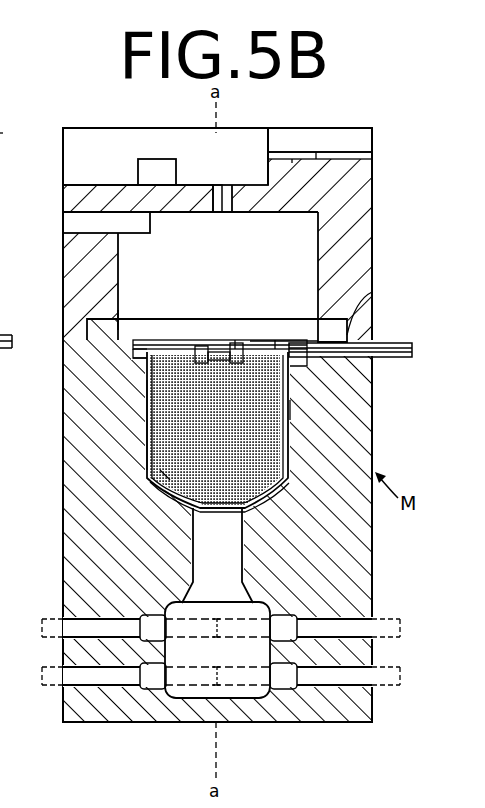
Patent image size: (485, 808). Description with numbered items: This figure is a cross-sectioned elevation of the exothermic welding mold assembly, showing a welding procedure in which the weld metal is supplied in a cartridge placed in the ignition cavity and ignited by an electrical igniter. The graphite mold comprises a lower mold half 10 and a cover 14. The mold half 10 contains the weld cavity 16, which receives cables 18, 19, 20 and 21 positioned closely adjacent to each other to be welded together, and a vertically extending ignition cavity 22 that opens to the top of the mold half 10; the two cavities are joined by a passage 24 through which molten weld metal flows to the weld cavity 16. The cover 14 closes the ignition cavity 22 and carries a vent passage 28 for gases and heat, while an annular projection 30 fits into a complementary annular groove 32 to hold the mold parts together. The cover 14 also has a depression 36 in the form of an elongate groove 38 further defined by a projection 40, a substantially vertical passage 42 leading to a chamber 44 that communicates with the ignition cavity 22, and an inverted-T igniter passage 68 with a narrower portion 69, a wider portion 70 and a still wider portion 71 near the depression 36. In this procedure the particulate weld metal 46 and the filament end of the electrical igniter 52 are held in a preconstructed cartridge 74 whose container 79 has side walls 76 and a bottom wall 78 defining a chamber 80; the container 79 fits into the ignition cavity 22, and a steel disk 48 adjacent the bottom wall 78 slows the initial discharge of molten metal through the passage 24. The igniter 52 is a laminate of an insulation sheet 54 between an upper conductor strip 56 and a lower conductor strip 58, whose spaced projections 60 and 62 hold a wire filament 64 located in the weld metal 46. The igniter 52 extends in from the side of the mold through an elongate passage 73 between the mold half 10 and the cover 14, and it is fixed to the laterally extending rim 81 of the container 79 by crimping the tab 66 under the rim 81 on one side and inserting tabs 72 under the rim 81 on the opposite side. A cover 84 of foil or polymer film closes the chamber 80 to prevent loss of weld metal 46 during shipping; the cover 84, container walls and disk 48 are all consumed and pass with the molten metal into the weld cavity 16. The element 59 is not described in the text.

The mold half 10 is at (78, 555).
The cover 14 is at (63, 250).
The weld cavity 16 is at (222, 660).
The cable 18 is at (44, 618).
The cable 19 is at (400, 618).
The cable 20 is at (42, 686).
The cable 21 is at (400, 686).
The ignition cavity 22 is at (298, 390).
The passage 24 is at (240, 556).
The vent passage 28 is at (63, 219).
The annular projection 30 is at (120, 326).
The annular groove 32 is at (110, 315).
The depression 36 is at (262, 139).
The elongate groove 38 is at (83, 135).
The projection 40 is at (157, 166).
The vertical passage 42 is at (222, 208).
The chamber 44 is at (224, 284).
The particulate weld metal 46 is at (216, 440).
The steel disk 48 is at (250, 509).
The electrical igniter 52 is at (392, 338).
The insulation sheet 54 is at (412, 349).
The upper conductor strip 56 is at (318, 340).
The lower conductor strip 58 is at (278, 398).
The edge 59 is at (10, 131).
The projection 60 is at (241, 365).
The projection 62 is at (201, 365).
The wire filament 64 is at (222, 362).
The tab 66 is at (140, 358).
The passage 68 is at (315, 135).
The narrower portion 69 is at (364, 138).
The wider portion 70 is at (374, 156).
The still wider portion 71 is at (292, 160).
The tabs 72 is at (278, 348).
The elongate passage 73 is at (372, 342).
The cartridge 74 is at (212, 335).
The side walls 76 is at (147, 432).
The bottom wall 78 is at (278, 492).
The container 79 is at (302, 422).
The chamber 80 is at (168, 460).
The rim 81 is at (147, 378).
The cover 84 is at (238, 340).